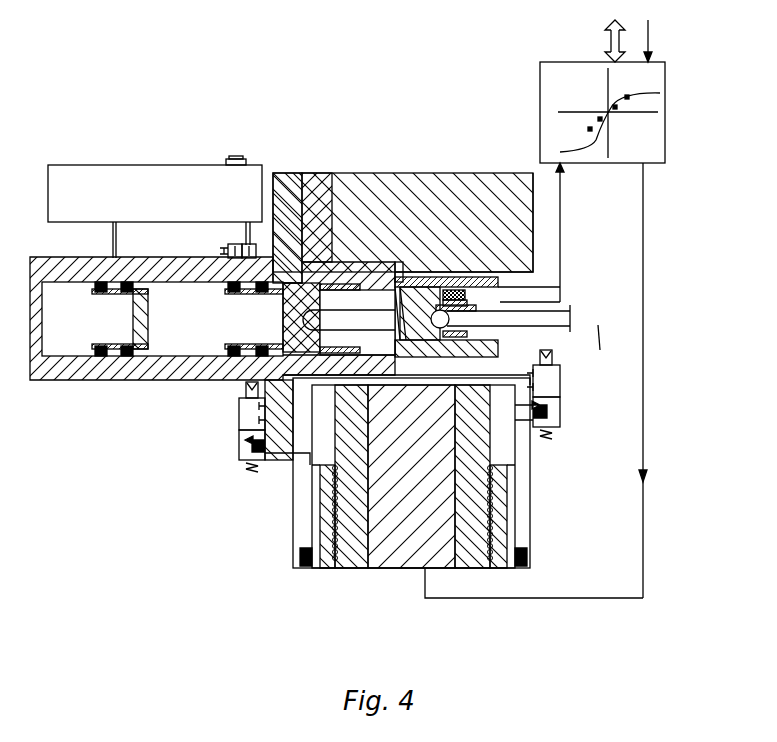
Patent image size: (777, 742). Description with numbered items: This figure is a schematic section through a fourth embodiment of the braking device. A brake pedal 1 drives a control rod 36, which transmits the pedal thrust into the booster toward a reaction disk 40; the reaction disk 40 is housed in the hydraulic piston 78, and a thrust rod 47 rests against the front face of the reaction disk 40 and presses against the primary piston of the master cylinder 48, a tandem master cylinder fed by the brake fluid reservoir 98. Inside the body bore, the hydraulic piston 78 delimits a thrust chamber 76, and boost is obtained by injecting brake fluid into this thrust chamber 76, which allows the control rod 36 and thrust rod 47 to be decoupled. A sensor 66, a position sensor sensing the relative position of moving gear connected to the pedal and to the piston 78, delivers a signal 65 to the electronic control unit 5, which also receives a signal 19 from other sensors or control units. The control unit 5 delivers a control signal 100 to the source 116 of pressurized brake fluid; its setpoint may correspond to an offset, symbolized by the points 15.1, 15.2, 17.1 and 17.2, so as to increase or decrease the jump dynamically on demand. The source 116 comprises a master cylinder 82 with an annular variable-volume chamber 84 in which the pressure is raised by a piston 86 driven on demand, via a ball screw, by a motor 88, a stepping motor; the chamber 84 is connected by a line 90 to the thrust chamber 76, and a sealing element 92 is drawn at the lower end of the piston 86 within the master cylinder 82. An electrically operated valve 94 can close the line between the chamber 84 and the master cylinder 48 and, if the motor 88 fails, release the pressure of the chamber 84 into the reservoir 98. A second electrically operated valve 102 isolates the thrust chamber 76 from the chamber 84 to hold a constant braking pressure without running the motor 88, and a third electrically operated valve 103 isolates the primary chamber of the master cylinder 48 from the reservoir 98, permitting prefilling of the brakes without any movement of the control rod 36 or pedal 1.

The brake pedal 1 is at (603, 355).
The electronic control unit 5 is at (540, 70).
The offset point 15.1 is at (590, 130).
The offset point 15.2 is at (600, 119).
The offset point 17.1 is at (616, 108).
The offset point 17.2 is at (628, 97).
The signal 19 is at (605, 42).
The control rod 36 is at (603, 372).
The reaction disk 40 is at (418, 290).
The thrust rod 47 is at (350, 300).
The master cylinder 48 is at (152, 381).
The signal 65 is at (561, 212).
The sensor 66 is at (485, 340).
The thrust chamber 76 is at (402, 288).
The hydraulic piston 78 is at (500, 285).
The master cylinder 82 is at (266, 552).
The variable-volume chamber 84 is at (515, 527).
The piston 86 is at (345, 569).
The motor 88 is at (424, 570).
The line 90 is at (518, 462).
The seal 92 is at (302, 568).
The electrically operated valve 94 is at (239, 452).
The brake fluid reservoir 98 is at (137, 165).
The control signal 100 is at (644, 433).
The second electrically operated valve 102 is at (561, 412).
The third electrically operated valve 103 is at (222, 247).
The source of pressurized brake fluid 116 is at (255, 610).